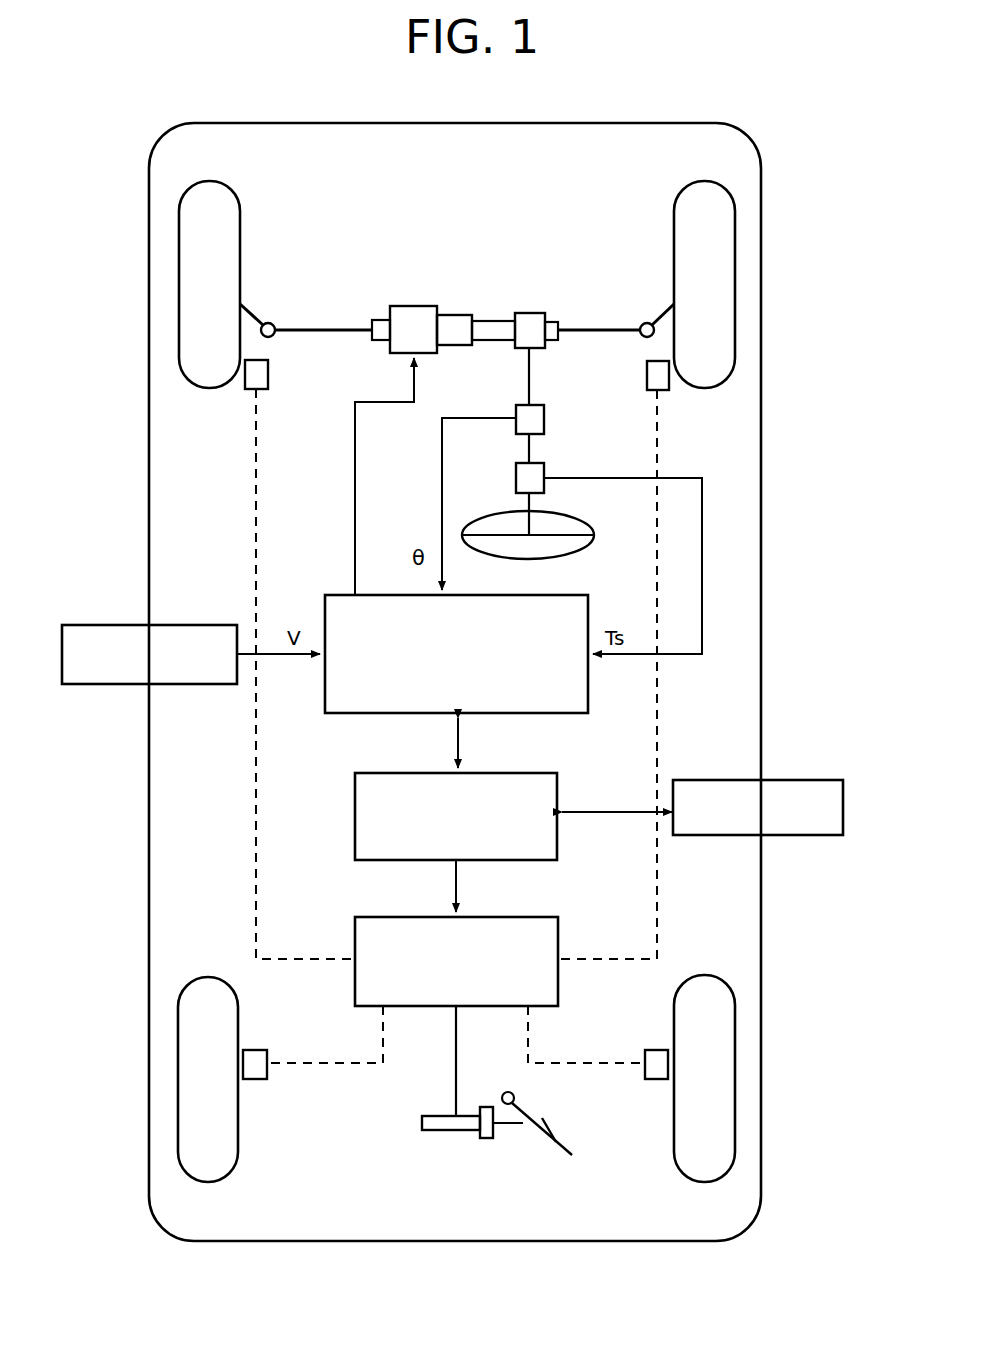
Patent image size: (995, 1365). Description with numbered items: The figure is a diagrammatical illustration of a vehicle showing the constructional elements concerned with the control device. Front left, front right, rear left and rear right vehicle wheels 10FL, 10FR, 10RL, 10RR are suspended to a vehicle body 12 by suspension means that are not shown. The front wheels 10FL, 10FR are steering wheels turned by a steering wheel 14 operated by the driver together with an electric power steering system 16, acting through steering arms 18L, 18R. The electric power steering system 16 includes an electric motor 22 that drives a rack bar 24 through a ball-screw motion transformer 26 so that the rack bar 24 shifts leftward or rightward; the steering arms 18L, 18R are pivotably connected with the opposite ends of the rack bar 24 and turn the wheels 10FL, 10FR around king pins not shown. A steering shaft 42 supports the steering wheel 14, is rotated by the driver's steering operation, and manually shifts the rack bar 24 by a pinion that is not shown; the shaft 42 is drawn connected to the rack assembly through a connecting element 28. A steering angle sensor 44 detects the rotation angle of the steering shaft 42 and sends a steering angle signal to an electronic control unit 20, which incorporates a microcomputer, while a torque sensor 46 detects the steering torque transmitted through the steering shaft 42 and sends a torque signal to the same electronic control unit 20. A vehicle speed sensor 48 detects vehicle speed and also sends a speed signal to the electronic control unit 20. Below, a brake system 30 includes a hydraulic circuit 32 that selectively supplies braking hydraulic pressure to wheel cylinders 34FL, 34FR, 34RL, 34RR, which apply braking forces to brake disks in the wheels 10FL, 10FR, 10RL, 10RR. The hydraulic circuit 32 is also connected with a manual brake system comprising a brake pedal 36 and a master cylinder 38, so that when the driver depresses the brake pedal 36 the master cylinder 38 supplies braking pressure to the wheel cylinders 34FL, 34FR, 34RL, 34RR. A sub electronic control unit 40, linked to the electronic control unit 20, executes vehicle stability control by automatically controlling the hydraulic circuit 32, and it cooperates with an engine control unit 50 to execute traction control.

The front left vehicle wheel 10FL is at (179, 301).
The front right vehicle wheel 10FR is at (735, 301).
The rear left vehicle wheel 10RL is at (178, 1083).
The rear right vehicle wheel 10RR is at (735, 1083).
The vehicle body 12 is at (761, 565).
The steering wheel 14 is at (573, 522).
The electric power steering system 16 is at (461, 325).
The left steering arm 18L is at (255, 320).
The right steering arm 18R is at (662, 316).
The electronic control unit 20 is at (444, 697).
The electric motor 22 is at (415, 306).
The rack bar 24 is at (300, 333).
The ball-screw motion transformer 26 is at (455, 347).
The connecting shaft 28 is at (495, 320).
The brake system 30 is at (477, 1090).
The hydraulic circuit 32 is at (444, 1002).
The front left wheel cylinder 34FL is at (270, 378).
The front right wheel cylinder 34FR is at (647, 372).
The rear left wheel cylinder 34RL is at (258, 1050).
The rear right wheel cylinder 34RR is at (657, 1050).
The brake pedal 36 is at (562, 1148).
The master cylinder 38 is at (438, 1132).
The sub electronic control unit 40 is at (444, 855).
The steering shaft 42 is at (532, 365).
The steering angle sensor 44 is at (546, 420).
The torque sensor 46 is at (516, 480).
The vehicle speed sensor 48 is at (185, 590).
The engine control unit 50 is at (700, 877).